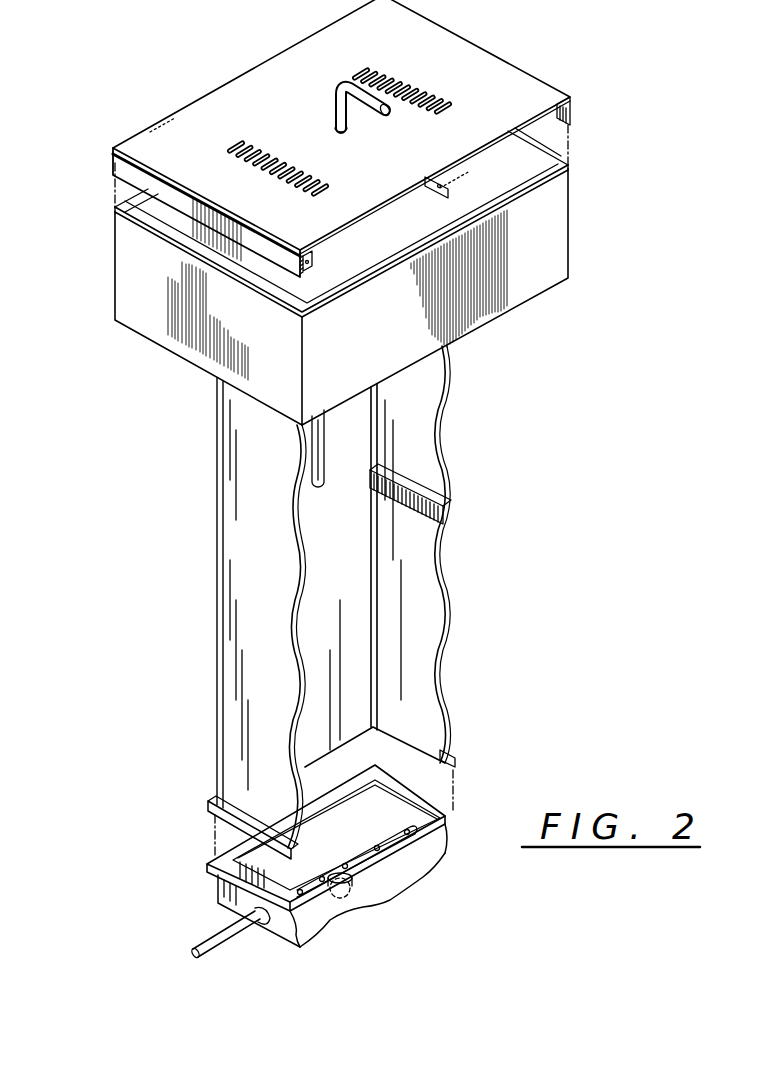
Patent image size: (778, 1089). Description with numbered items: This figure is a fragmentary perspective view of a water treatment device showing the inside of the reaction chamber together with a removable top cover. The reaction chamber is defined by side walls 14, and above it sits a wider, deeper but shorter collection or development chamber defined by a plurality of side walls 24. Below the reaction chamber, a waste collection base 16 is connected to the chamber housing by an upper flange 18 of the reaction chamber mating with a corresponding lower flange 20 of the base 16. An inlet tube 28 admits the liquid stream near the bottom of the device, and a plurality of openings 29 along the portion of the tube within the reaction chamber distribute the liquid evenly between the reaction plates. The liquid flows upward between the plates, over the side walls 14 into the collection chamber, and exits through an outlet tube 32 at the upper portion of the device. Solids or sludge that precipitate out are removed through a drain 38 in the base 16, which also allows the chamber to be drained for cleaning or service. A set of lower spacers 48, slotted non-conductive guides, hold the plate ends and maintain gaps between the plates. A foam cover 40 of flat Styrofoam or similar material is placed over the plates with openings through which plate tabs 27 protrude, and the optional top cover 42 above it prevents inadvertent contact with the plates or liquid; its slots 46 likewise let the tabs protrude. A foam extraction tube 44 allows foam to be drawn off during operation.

The side walls 14 is at (320, 562).
The waste collection base 16 is at (333, 901).
The upper flange 18 is at (208, 802).
The lower flange 20 is at (208, 870).
The side walls 24 is at (336, 276).
The plate tabs 27 is at (312, 262).
The inlet tube 28 is at (243, 933).
The openings 29 is at (410, 832).
The outlet tube 32 is at (316, 452).
The drain 38 is at (350, 887).
The foam cover 40 is at (173, 223).
The top cover 42 is at (258, 109).
The foam extraction tube 44 is at (348, 90).
The slots 46 is at (233, 147).
The lower spacers 48 is at (407, 497).